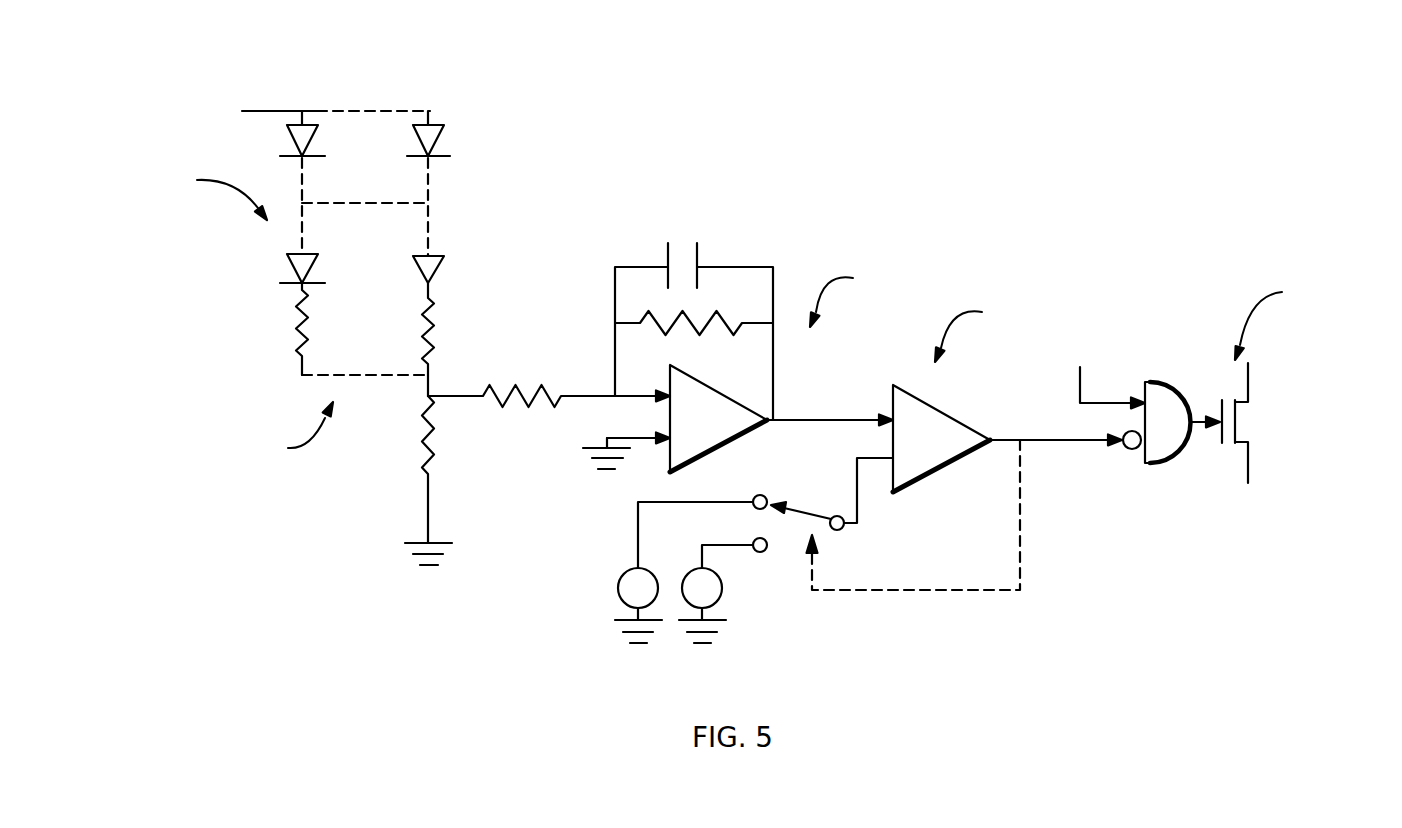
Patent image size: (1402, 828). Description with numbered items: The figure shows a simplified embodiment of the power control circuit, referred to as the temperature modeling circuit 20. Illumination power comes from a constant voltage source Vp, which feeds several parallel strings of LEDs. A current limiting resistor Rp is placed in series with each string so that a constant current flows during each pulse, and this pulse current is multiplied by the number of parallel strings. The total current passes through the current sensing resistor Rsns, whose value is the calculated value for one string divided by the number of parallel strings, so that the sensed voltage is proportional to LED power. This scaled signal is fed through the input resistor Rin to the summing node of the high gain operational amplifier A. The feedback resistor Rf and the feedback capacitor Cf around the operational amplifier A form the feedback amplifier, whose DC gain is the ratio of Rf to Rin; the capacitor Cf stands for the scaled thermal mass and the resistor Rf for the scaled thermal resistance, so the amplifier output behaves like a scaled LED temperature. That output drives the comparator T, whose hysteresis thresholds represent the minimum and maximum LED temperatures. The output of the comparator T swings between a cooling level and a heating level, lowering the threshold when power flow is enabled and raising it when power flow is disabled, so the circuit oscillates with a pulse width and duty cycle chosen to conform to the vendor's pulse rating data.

The temperature modeling circuit 20 is at (726, 348).
The constant voltage source Vp is at (279, 89).
The current limiting resistor Rp is at (334, 329).
The current sensing resistor Rsns is at (471, 480).
The input resistor Rin is at (543, 374).
The feedback capacitor Cf is at (683, 249).
The feedback resistor Rf is at (694, 306).
The operational amplifier A is at (718, 418).
The comparator T is at (941, 438).